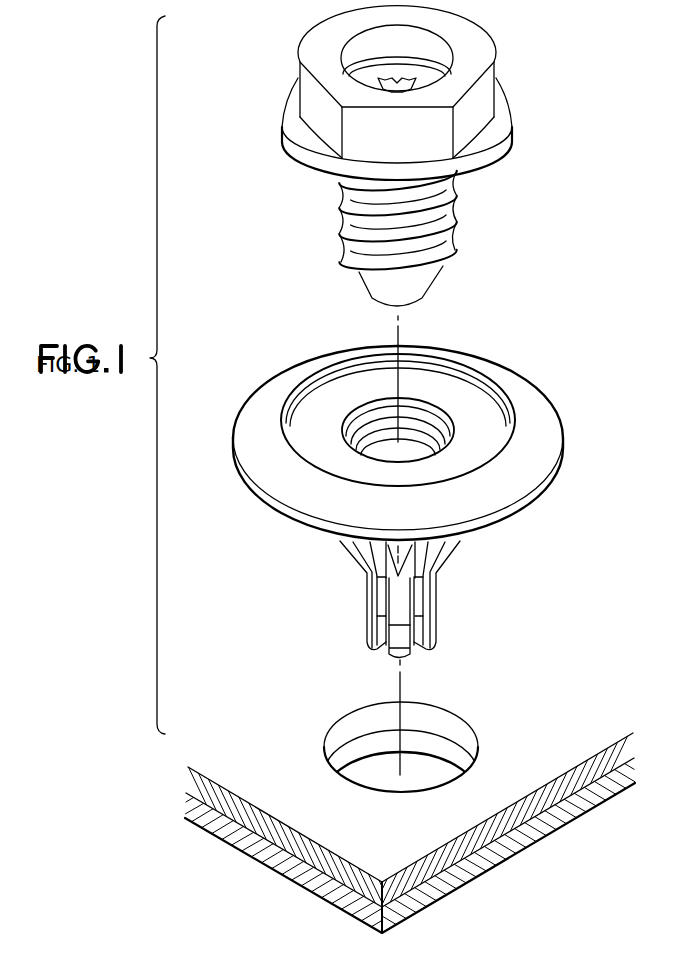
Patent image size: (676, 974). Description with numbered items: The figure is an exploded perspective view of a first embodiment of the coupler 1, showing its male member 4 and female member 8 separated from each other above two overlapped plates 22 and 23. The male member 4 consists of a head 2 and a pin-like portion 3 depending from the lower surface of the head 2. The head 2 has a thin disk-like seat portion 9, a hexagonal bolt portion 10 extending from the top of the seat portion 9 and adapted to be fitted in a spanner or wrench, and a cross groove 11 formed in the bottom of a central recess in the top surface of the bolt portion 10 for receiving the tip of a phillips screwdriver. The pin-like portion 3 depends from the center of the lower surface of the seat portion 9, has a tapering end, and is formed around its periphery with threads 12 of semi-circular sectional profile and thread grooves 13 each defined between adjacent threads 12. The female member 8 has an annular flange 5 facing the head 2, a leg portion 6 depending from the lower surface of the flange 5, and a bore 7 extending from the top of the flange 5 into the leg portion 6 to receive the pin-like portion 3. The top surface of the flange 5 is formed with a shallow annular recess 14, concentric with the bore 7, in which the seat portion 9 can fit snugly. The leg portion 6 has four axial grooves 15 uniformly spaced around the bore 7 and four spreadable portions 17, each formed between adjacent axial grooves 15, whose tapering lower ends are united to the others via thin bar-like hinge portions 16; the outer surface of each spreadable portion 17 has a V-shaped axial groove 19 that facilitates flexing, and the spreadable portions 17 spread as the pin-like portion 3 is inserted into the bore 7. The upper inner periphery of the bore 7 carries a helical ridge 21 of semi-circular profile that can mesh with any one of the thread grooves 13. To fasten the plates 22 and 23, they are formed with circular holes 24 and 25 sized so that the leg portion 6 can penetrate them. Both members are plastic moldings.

The coupler 1 is at (603, 168).
The head 2 is at (550, 34).
The pin-like portion 3 is at (455, 236).
The male member 4 is at (578, 92).
The flange 5 is at (526, 497).
The leg portion 6 is at (499, 547).
The bore 7 is at (408, 455).
The female member 8 is at (551, 514).
The seat portion 9 is at (494, 147).
The hexagonal bolt portion 10 is at (486, 91).
The cross groove 11 is at (418, 82).
The threads 12 is at (348, 213).
The thread grooves 13 is at (352, 250).
The annular recess 14 is at (303, 418).
The axial grooves 15 is at (378, 626).
The hinge portions 16 is at (405, 613).
The spreadable portions 17 is at (417, 552).
The axial groove 19 is at (386, 556).
The ridge 21 is at (372, 431).
The plate 22 is at (193, 783).
The plate 23 is at (187, 809).
The circular hole 24 is at (343, 727).
The circular hole 25 is at (340, 756).